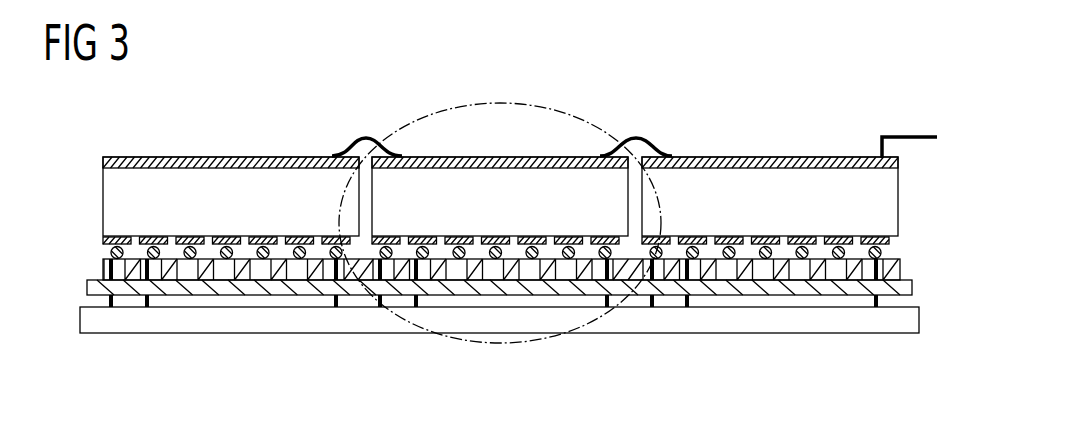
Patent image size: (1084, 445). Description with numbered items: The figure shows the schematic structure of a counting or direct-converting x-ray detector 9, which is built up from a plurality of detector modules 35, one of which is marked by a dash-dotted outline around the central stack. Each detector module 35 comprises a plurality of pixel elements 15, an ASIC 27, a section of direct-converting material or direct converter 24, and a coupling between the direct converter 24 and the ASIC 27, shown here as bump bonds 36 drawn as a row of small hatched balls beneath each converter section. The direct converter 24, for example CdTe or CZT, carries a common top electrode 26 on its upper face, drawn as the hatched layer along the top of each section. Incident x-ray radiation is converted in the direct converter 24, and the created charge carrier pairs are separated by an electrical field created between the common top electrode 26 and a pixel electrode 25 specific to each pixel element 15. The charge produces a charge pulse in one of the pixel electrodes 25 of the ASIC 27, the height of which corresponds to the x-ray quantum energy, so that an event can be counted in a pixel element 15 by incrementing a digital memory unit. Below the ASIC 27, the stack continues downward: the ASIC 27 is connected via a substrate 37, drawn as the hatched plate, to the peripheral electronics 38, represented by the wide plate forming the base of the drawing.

The x-ray detector 9 is at (708, 146).
The direct converter 24 is at (113, 187).
The common top electrode 26 is at (232, 162).
The bump bonds 36 is at (109, 256).
The detector module 35 is at (493, 103).
The ASIC 27 is at (902, 263).
The pixel electrode 25 is at (298, 275).
The pixel element 15 is at (199, 343).
The substrate 37 is at (912, 285).
The peripheral electronics 38 is at (797, 318).